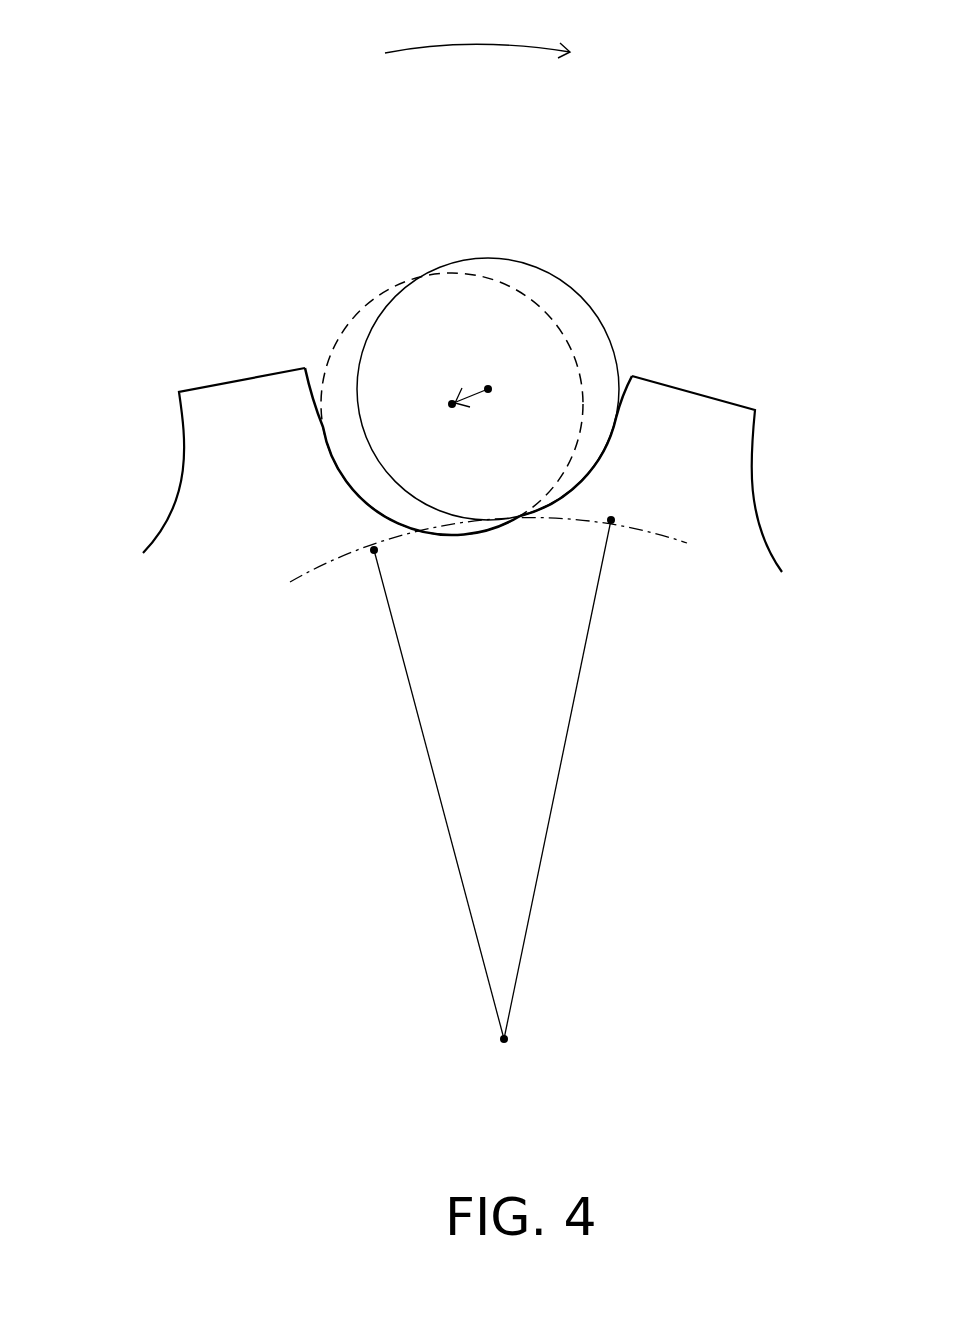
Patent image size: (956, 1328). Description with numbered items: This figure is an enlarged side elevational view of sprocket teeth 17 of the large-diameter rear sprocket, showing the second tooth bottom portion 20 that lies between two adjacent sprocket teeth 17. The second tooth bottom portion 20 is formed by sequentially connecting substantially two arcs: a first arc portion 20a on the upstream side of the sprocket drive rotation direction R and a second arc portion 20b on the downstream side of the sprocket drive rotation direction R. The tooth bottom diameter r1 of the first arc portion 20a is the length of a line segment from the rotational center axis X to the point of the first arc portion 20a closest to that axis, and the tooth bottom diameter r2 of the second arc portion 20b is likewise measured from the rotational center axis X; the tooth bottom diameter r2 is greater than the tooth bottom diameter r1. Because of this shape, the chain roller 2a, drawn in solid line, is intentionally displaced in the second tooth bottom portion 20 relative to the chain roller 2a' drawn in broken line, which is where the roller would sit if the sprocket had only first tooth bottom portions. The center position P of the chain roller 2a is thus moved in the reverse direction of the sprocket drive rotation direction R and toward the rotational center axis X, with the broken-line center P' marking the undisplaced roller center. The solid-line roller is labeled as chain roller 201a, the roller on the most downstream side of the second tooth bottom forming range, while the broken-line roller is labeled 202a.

The sprocket tooth 17 is at (177, 380).
The second tooth bottom portion 20 is at (418, 403).
The first arc portion 20a is at (362, 494).
The second arc portion 20b is at (556, 494).
The chain roller 2a is at (556, 348).
The chain roller 201a is at (558, 277).
The chain roller 2a' is at (395, 356).
The roller of second chain 202a is at (363, 300).
The center position P is at (504, 401).
The roller center (second position) P' is at (457, 384).
The tooth bottom diameter r1 is at (437, 792).
The tooth bottom diameter r2 is at (559, 777).
The rotational center axis X is at (506, 1060).
The sprocket drive rotation direction R is at (477, 35).